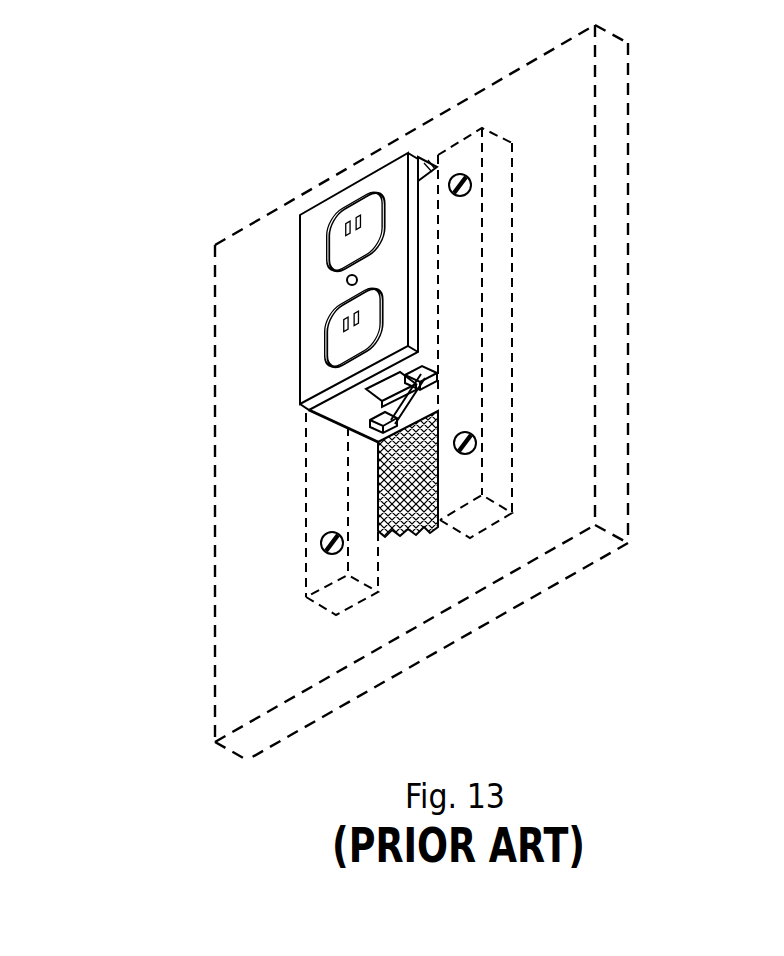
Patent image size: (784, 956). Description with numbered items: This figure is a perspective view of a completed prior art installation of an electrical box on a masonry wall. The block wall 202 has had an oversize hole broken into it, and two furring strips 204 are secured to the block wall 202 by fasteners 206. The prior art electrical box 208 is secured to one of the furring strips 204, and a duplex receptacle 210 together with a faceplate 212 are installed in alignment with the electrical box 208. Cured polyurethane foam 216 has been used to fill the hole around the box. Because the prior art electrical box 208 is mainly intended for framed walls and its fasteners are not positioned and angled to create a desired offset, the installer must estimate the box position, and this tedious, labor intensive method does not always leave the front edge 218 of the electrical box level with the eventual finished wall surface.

The block wall 202 is at (300, 671).
The furring strips 204 is at (467, 305).
The fasteners 206 is at (320, 545).
The prior art electrical box 208 is at (423, 258).
The duplex receptacle 210 is at (340, 235).
The faceplate 212 is at (320, 374).
The cured polyurethane foam 216 is at (420, 158).
The front edge 218 is at (418, 397).